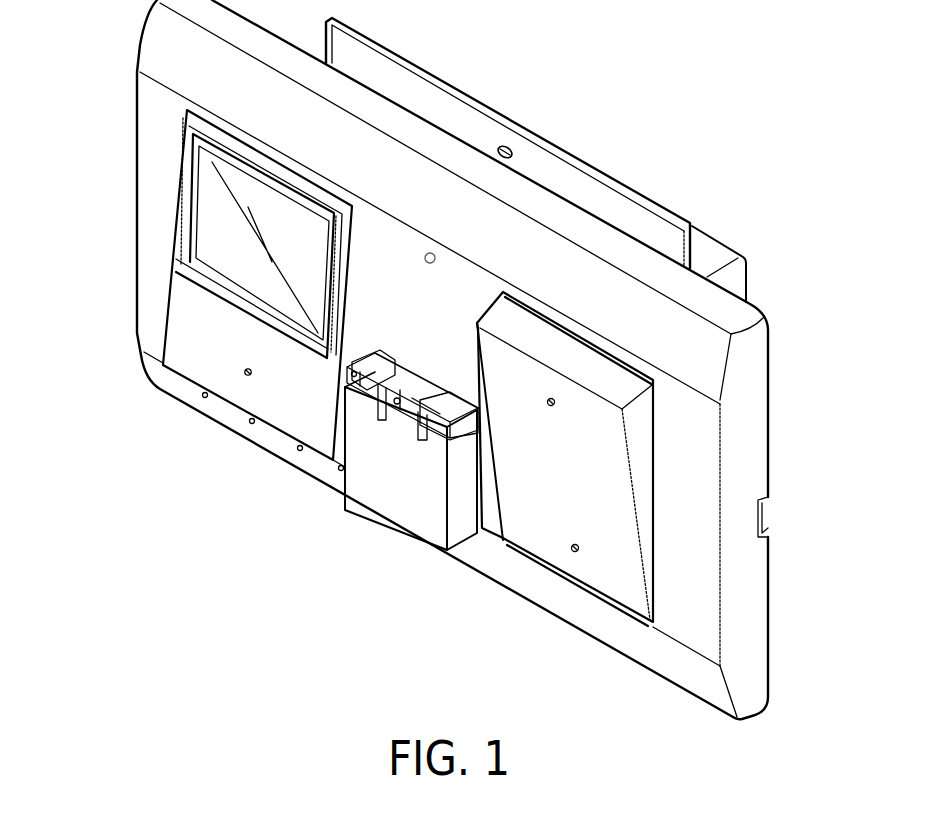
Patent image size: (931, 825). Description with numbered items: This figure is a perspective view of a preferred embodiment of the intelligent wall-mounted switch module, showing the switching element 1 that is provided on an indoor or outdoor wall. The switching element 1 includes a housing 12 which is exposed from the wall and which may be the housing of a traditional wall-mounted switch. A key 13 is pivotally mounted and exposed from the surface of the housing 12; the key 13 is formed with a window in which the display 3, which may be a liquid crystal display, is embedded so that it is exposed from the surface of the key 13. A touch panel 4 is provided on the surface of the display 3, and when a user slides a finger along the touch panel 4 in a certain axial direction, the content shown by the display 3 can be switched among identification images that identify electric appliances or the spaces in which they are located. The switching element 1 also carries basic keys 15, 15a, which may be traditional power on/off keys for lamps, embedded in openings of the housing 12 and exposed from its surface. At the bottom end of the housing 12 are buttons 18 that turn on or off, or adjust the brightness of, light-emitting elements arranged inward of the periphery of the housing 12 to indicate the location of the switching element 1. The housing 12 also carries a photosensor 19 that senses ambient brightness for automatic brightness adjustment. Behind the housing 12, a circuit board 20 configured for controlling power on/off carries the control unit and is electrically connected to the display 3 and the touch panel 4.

The switching element 1 is at (124, 110).
The housing 12 is at (150, 172).
The display 3 is at (186, 221).
The touch panel 4 is at (208, 236).
The key 13 is at (183, 318).
The button 18 is at (252, 422).
The basic key 15 is at (495, 383).
The basic key 15a is at (398, 482).
The photosensor 19 is at (423, 252).
The circuit board 20 is at (665, 212).